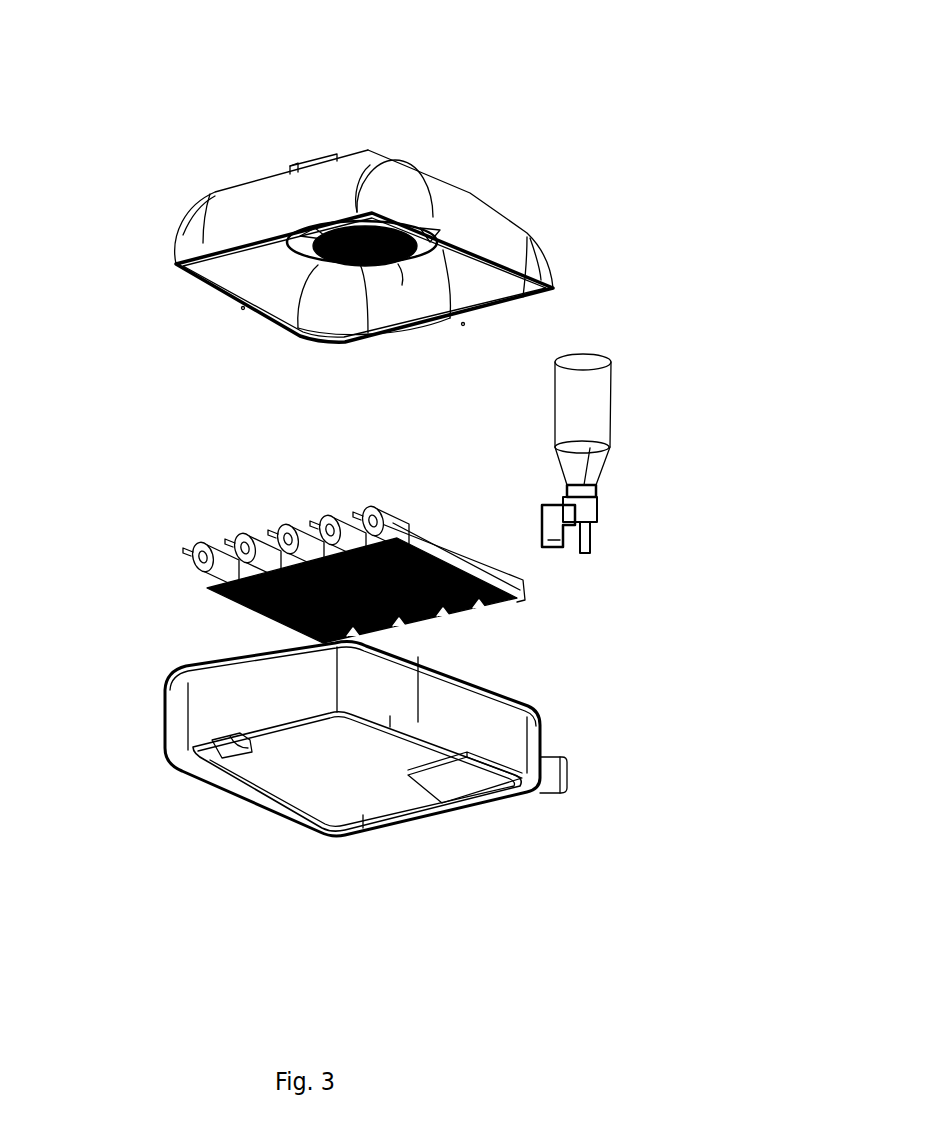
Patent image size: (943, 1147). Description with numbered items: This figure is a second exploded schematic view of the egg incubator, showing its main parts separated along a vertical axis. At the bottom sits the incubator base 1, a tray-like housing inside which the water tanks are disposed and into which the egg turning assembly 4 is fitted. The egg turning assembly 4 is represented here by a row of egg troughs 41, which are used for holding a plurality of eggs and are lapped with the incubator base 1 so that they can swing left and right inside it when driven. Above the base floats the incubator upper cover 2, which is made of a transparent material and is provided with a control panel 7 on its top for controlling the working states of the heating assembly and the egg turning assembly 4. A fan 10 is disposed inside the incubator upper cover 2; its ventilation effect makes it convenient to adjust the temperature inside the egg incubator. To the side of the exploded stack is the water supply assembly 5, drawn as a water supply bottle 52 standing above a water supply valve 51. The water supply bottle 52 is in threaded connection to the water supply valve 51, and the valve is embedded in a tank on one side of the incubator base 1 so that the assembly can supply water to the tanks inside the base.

The incubator base 1 is at (507, 725).
The incubator upper cover 2 is at (483, 228).
The egg turning assembly 4 is at (208, 747).
The water supply assembly 5 is at (694, 453).
The control panel 7 is at (335, 160).
The fan 10 is at (327, 257).
The egg troughs 41 is at (200, 582).
The water supply valve 51 is at (635, 506).
The water supply bottle 52 is at (585, 422).